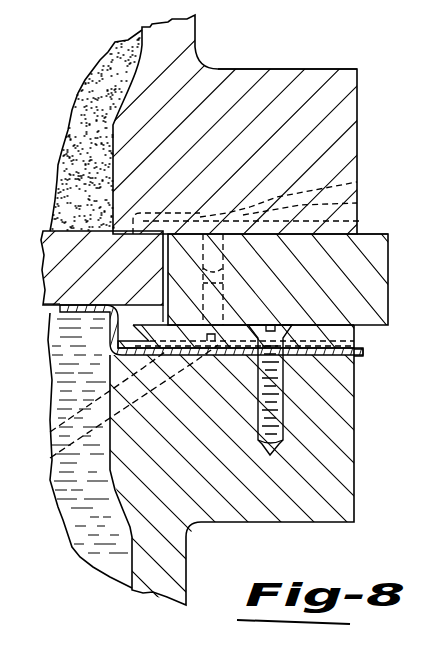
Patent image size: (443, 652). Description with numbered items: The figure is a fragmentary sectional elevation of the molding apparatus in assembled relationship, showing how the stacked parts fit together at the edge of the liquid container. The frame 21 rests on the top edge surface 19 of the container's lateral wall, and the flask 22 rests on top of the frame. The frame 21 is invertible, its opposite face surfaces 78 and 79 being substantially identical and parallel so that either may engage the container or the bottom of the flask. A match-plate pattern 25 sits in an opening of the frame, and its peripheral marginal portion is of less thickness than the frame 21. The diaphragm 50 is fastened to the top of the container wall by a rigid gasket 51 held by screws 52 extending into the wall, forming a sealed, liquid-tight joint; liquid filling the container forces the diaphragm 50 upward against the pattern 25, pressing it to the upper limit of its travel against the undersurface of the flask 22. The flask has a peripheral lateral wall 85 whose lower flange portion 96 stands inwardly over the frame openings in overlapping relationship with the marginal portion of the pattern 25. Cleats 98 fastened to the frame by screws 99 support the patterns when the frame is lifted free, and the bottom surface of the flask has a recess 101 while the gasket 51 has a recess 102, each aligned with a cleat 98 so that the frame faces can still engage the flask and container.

The top edge surface 19 is at (203, 537).
The frame 21 is at (389, 298).
The flask 22 is at (299, 67).
The match-plate pattern 25 is at (83, 232).
The diaphragm 50 is at (365, 357).
The rigid gasket 51 is at (118, 331).
The screw 52 is at (280, 387).
The face surface 78 is at (364, 236).
The face surface 79 is at (373, 329).
The lateral wall 85 is at (128, 73).
The flange portion 96 is at (248, 72).
The cleat 98 is at (357, 203).
The screw 99 is at (357, 182).
The recess 101 is at (357, 233).
The recess 102 is at (363, 350).